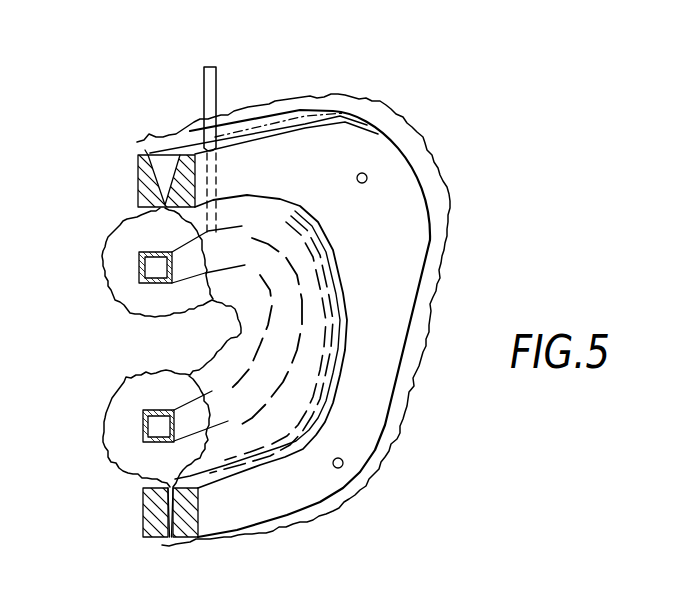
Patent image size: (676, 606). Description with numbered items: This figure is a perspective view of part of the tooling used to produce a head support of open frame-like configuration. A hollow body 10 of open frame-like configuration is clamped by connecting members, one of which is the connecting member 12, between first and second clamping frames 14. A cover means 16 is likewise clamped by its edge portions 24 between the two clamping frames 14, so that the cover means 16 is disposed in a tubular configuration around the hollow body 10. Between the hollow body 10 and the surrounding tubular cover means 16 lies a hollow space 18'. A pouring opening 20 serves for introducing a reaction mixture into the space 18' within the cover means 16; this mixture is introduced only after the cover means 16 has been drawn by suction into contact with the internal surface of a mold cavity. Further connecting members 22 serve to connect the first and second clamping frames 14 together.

The hollow body 10 is at (155, 423).
The connecting member 12 is at (211, 95).
The clamping frames 14 is at (152, 190).
The cover means 16 is at (108, 282).
The hollow space 18' is at (128, 253).
The pouring opening 20 is at (137, 165).
The connecting members 22 is at (367, 174).
The edge portions 24 is at (188, 140).